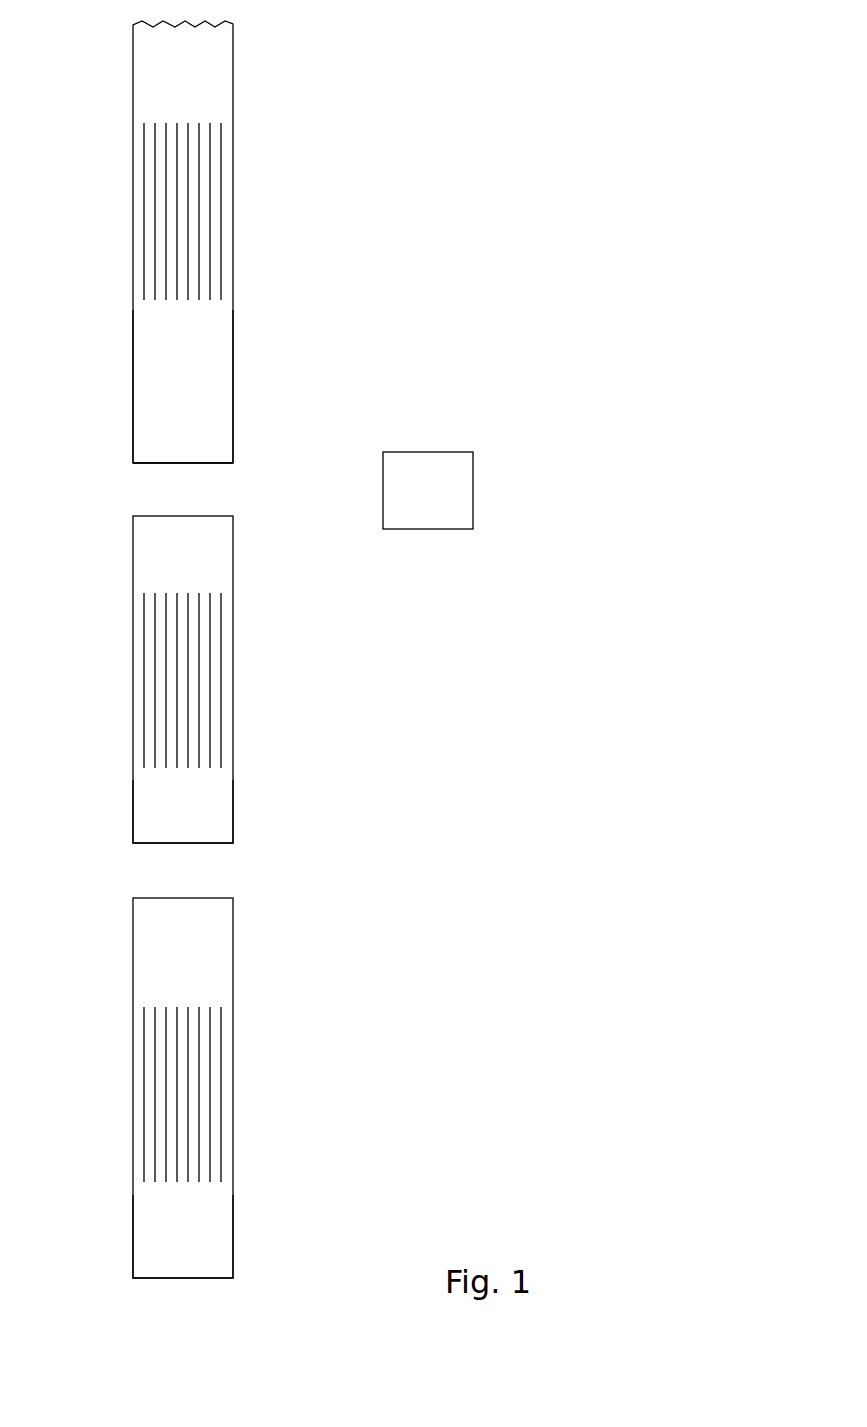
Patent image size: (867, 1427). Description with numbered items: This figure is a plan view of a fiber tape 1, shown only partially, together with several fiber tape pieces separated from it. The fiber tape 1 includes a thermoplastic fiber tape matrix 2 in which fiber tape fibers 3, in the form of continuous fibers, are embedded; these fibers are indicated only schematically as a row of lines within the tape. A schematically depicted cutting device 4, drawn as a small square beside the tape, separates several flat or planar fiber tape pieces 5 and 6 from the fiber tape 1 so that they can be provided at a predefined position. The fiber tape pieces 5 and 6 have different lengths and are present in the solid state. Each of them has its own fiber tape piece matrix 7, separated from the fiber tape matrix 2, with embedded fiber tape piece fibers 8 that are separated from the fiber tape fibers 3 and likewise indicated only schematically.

The fiber tape 1 is at (244, 242).
The fiber tape matrix 2 is at (222, 370).
The fiber tape fibers 3 is at (220, 230).
The cutting device 4 is at (445, 458).
The fiber tape piece 5 is at (245, 1078).
The fiber tape piece 6 is at (244, 658).
The fiber tape piece matrix 7 is at (146, 806).
The fiber tape piece fibers 8 is at (145, 668).